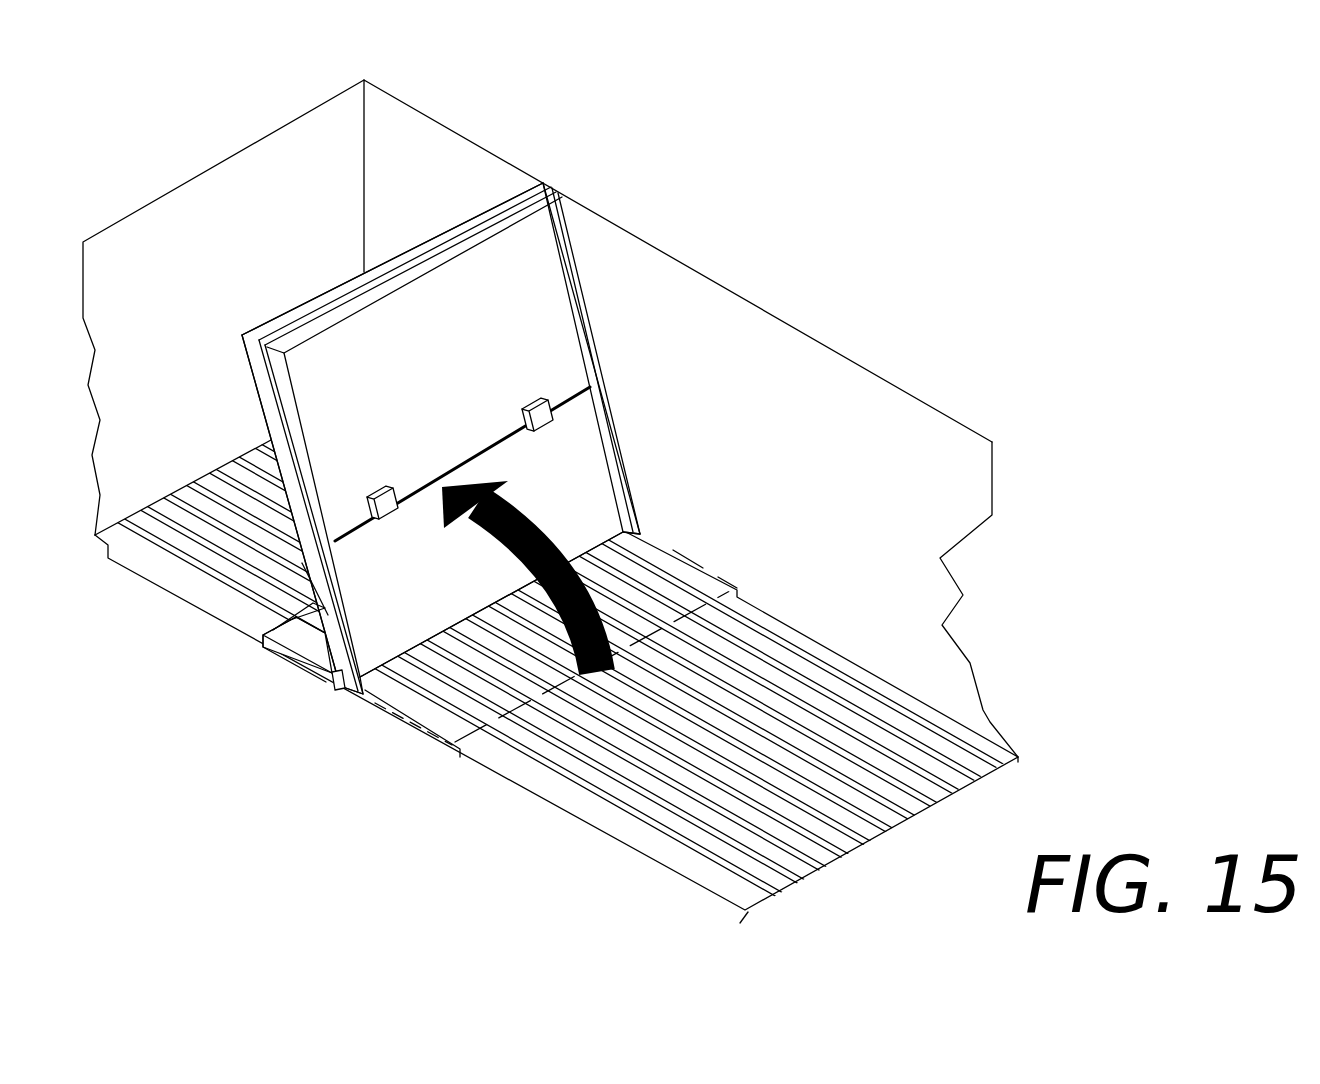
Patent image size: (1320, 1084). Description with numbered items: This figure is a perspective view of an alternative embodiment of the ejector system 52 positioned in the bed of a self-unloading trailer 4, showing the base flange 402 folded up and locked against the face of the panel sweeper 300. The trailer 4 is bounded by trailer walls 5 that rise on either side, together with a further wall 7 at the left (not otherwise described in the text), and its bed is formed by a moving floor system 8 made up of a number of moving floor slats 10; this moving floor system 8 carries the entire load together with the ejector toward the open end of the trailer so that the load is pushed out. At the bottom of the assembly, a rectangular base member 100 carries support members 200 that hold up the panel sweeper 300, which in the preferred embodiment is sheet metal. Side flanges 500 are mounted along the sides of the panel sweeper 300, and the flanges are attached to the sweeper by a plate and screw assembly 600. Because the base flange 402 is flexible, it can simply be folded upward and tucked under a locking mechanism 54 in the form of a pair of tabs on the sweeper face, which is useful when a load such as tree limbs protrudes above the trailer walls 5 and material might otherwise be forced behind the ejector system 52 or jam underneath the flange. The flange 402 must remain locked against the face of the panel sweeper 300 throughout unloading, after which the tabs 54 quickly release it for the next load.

The trailer 4 is at (912, 393).
The trailer walls 5 is at (862, 473).
The left side wall 7 is at (268, 241).
The moving floor system 8 is at (826, 626).
The moving floor slats 10 is at (825, 860).
The ejector system 52 is at (656, 339).
The locking mechanism 54 is at (531, 399).
The base member 100 is at (288, 650).
The support members 200 is at (277, 613).
The panel sweeper 300 is at (537, 263).
The base flange 402 is at (613, 512).
The side flanges 500 is at (592, 388).
The plate and screw assembly 600 is at (336, 689).